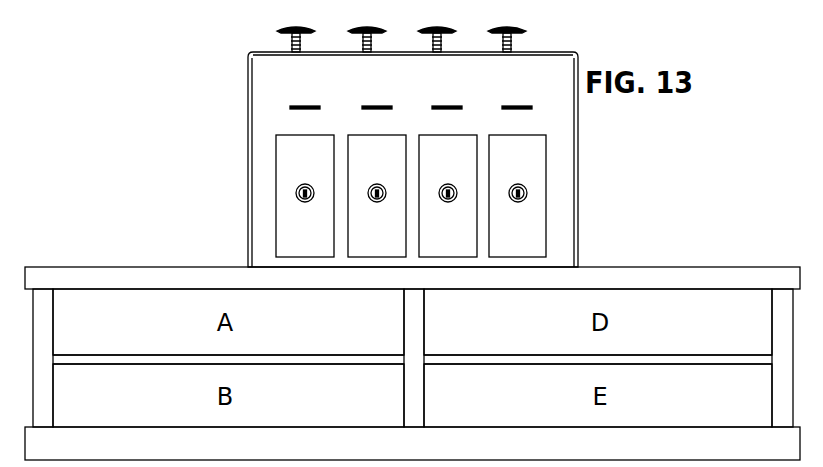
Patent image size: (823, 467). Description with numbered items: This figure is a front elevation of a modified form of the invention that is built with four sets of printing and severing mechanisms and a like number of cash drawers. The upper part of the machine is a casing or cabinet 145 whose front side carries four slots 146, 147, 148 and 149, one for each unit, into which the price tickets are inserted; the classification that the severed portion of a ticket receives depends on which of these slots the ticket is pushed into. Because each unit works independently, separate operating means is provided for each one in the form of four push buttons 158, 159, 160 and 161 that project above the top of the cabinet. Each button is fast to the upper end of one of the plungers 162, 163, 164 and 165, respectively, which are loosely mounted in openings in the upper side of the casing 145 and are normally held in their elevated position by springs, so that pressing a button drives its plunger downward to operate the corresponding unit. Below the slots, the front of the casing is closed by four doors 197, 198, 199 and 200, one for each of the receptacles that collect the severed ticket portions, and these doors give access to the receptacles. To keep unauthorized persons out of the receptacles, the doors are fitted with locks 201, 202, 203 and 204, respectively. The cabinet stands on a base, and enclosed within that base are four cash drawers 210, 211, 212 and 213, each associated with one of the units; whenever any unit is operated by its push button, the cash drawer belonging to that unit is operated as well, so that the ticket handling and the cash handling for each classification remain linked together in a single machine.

The casing or cabinet 145 is at (568, 124).
The slot 146 is at (296, 107).
The slot 147 is at (366, 107).
The slot 148 is at (436, 107).
The slot 149 is at (525, 108).
The push button 158 is at (282, 35).
The push button 159 is at (352, 35).
The push button 160 is at (423, 35).
The push button 161 is at (490, 35).
The plunger 162 is at (292, 52).
The plunger 163 is at (362, 52).
The plunger 164 is at (432, 52).
The plunger 165 is at (503, 52).
The door 197 is at (306, 143).
The door 198 is at (386, 143).
The door 199 is at (458, 143).
The door 200 is at (533, 143).
The lock 201 is at (311, 170).
The lock 202 is at (385, 170).
The lock 203 is at (463, 170).
The lock 204 is at (528, 170).
The cash drawer 210 is at (103, 296).
The cash drawer 211 is at (105, 410).
The cash drawer 212 is at (702, 298).
The cash drawer 213 is at (722, 418).